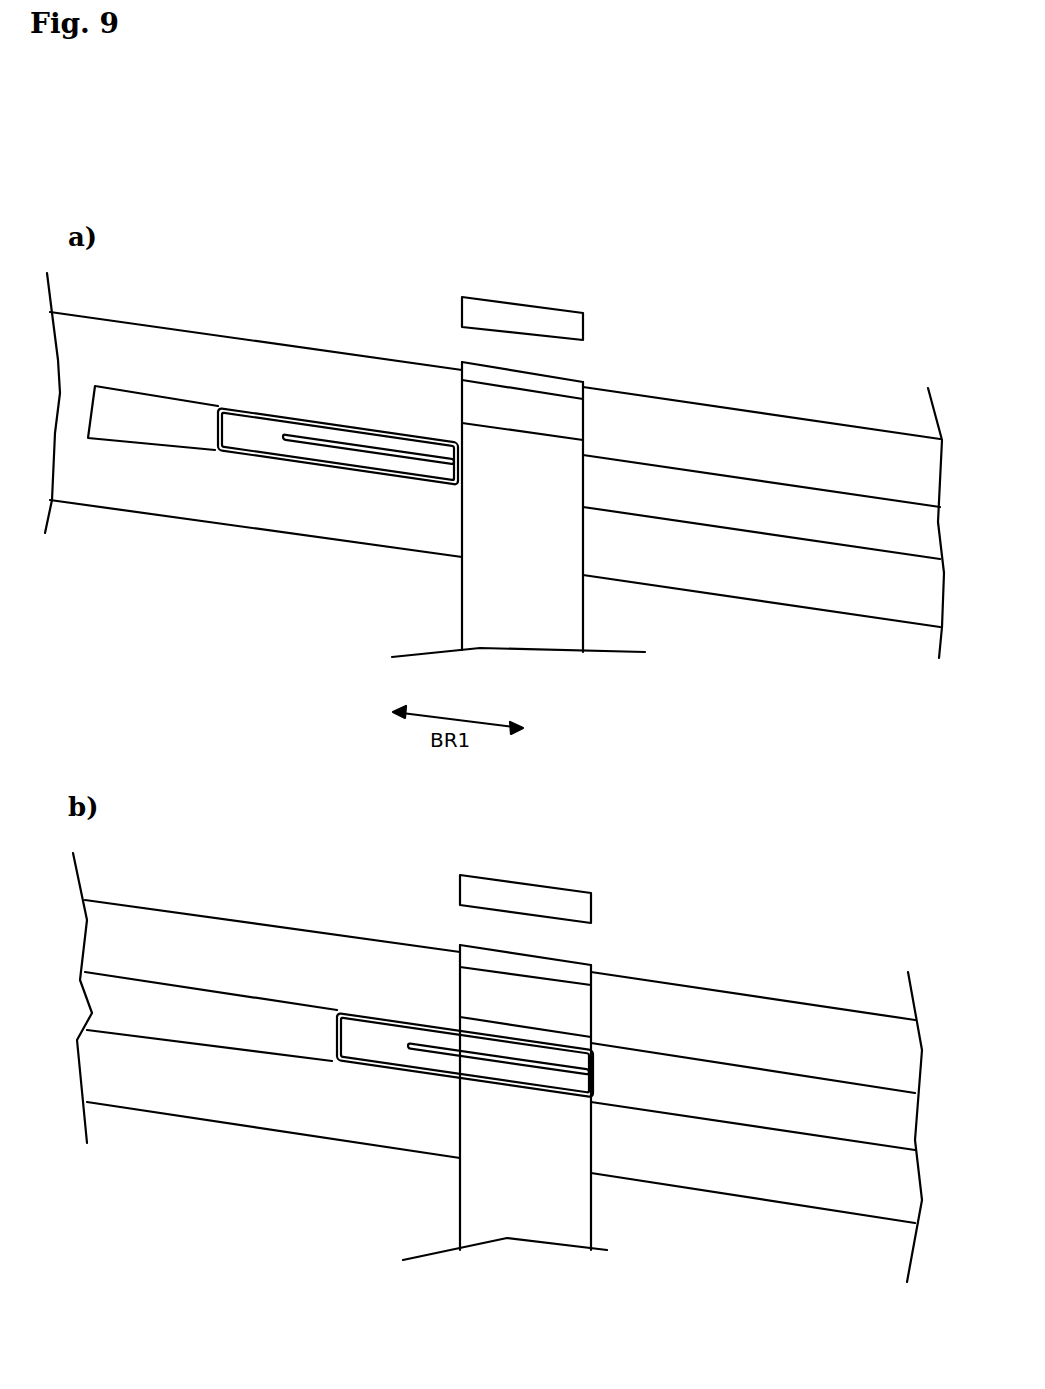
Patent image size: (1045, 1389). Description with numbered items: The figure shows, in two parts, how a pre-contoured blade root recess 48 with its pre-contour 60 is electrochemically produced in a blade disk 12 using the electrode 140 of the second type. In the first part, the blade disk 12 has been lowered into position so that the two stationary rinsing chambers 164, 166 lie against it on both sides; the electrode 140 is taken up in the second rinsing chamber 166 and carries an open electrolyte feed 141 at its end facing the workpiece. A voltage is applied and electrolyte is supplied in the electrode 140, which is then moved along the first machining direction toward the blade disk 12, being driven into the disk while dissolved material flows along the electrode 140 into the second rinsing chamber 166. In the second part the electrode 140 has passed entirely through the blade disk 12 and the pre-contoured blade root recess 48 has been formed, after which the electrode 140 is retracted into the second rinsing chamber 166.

The blade disk 12 is at (552, 608).
The pre-contoured blade root recess 48 is at (480, 407).
The pre-contour 60 is at (528, 338).
The electrode of the second type 140 is at (340, 433).
The open electrolyte feed 141 is at (403, 453).
The first rinsing chamber 164 is at (722, 451).
The second rinsing chamber 166 is at (202, 371).